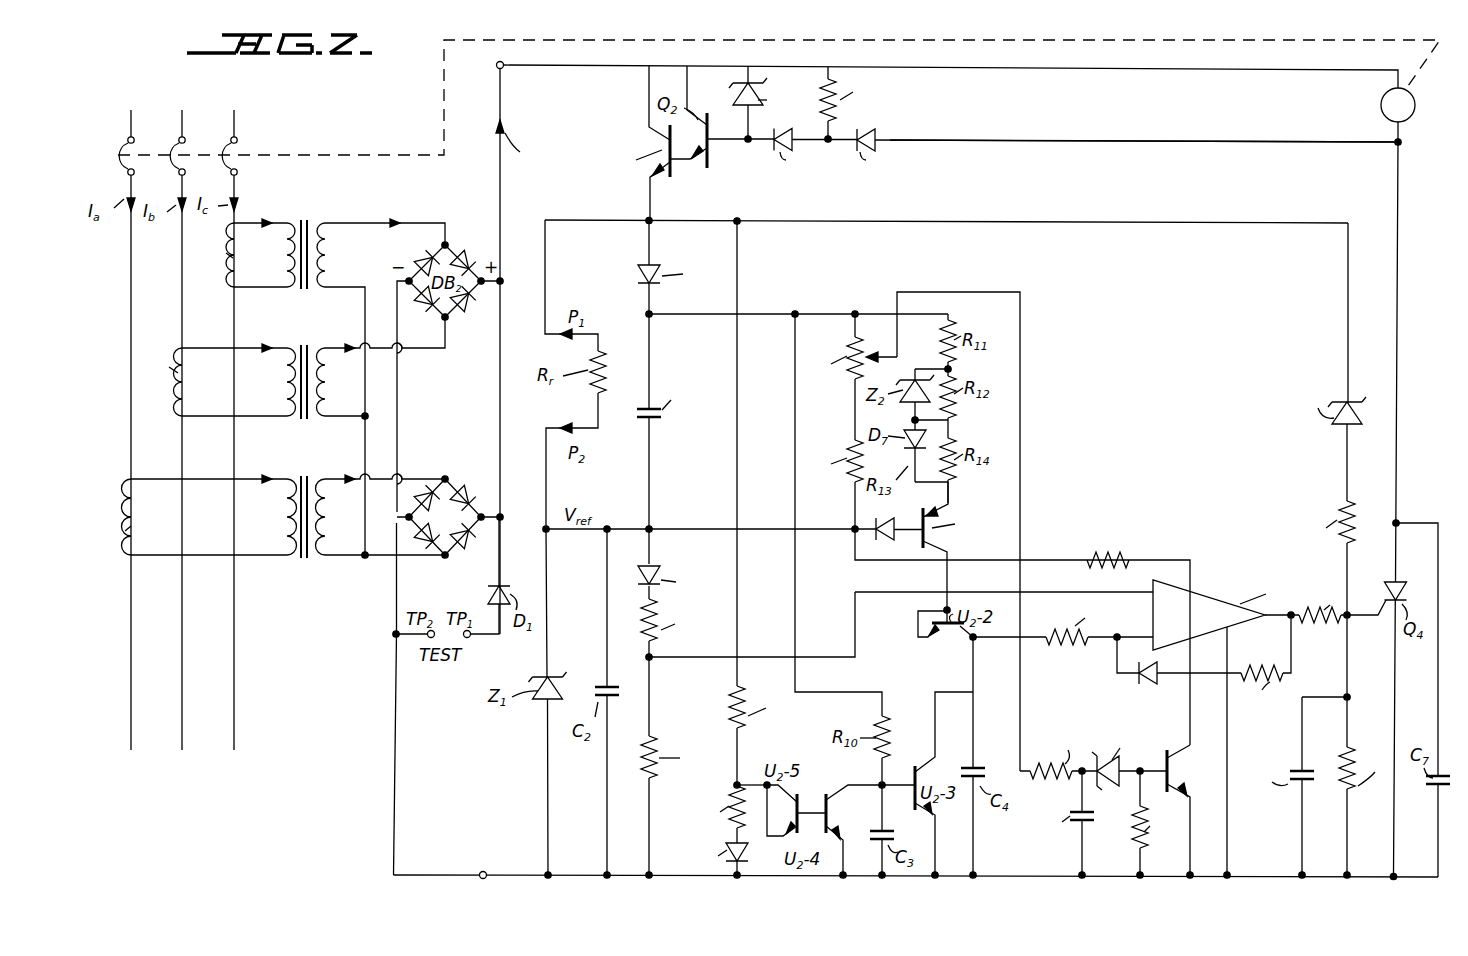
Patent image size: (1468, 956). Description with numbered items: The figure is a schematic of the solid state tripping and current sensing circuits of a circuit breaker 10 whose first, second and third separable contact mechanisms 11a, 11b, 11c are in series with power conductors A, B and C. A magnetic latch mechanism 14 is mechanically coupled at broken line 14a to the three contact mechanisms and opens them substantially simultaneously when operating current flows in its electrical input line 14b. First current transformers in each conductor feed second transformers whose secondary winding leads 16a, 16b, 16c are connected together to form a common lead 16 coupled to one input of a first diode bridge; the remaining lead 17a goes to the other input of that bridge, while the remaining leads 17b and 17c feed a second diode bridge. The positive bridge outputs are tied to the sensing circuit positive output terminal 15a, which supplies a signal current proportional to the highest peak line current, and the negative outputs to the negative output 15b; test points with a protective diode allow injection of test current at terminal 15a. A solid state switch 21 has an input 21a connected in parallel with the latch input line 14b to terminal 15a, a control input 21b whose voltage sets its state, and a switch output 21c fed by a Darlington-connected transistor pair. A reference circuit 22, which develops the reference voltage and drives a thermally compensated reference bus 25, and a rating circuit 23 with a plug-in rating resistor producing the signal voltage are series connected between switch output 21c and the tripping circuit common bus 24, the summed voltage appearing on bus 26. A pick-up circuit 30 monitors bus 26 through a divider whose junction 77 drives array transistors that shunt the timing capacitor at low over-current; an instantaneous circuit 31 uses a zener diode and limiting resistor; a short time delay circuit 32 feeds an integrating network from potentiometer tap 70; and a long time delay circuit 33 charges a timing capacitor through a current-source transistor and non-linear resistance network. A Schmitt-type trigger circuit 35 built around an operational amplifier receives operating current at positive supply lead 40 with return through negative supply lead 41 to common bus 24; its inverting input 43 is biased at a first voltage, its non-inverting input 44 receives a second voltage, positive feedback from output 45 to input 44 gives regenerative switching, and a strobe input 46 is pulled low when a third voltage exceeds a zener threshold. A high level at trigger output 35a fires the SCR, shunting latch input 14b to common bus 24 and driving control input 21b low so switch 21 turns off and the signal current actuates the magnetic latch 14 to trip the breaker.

The circuit breaker 10 is at (247, 811).
The first separable contact mechanism 11a is at (120, 153).
The second separable contact mechanism 11b is at (171, 152).
The third separable contact mechanism 11c is at (225, 152).
The magnetic latch mechanism 14 is at (1415, 108).
The broken line 14a is at (828, 40).
The electrical input line 14b is at (1283, 70).
The sensing circuit positive output terminal 15a is at (504, 70).
The sensing circuit negative output 15b is at (484, 879).
The common lead 16 is at (415, 560).
The current transformer secondary phase A 16a is at (344, 560).
The current transformer secondary phase B 16b is at (360, 420).
The current transformer secondary phase C 16c is at (358, 288).
The remaining secondary winding lead 17a is at (415, 479).
The remaining secondary winding lead 17b is at (418, 350).
The remaining secondary winding lead 17c is at (425, 223).
The solid state switch 21 is at (1052, 121).
The switch input 21a is at (752, 66).
The control input 21b is at (995, 141).
The switch output 21c is at (652, 203).
The reference circuit 22 is at (660, 690).
The rating circuit 23 is at (662, 436).
The tripping circuit common bus 24 is at (862, 877).
The reference bus 25 is at (780, 655).
The bus 26 is at (820, 221).
The pick-up circuit 30 is at (786, 705).
The instantaneous circuit 31 is at (1330, 479).
The short time delay circuit 32 is at (1064, 714).
The long time delay circuit 33 is at (936, 519).
The trigger circuit 35 is at (1213, 583).
The trigger circuit output 35a is at (1350, 622).
The positive supply lead 40 is at (1179, 560).
The negative supply lead 41 is at (1228, 795).
The inverting input 43 is at (1072, 596).
The non-inverting input 44 is at (1134, 620).
The operational amplifier output 45 is at (1291, 622).
The strobe input 46 is at (1192, 722).
The adjustable tap 70 is at (890, 350).
The junction 77 is at (746, 786).